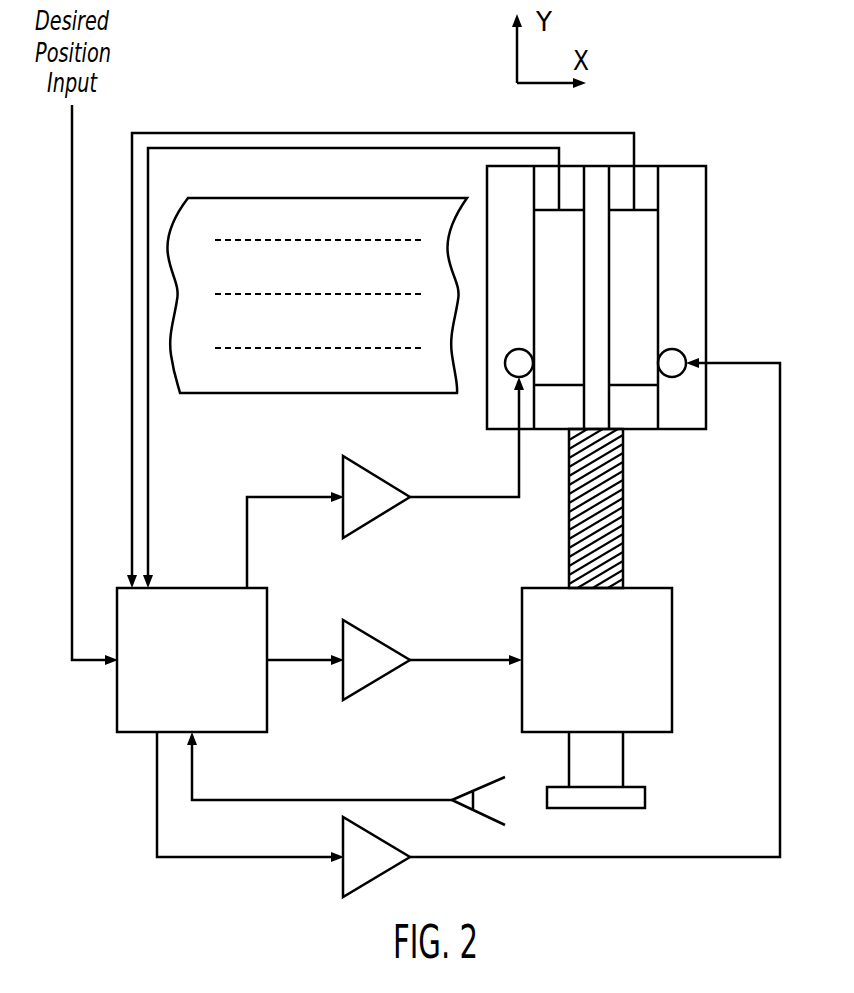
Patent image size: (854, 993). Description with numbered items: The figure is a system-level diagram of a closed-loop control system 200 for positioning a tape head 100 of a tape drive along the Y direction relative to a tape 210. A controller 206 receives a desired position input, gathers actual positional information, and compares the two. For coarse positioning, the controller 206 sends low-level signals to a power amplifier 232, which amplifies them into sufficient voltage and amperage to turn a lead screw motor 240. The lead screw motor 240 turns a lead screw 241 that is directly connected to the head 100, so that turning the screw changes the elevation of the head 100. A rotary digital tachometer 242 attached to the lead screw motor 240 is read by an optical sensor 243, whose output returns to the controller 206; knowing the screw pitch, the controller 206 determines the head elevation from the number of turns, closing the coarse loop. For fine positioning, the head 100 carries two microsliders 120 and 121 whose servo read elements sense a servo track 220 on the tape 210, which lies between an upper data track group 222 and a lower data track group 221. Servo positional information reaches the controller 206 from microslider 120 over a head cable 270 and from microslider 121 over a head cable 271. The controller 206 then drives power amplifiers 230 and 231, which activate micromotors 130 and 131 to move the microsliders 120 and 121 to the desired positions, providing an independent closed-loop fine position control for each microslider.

The head 100 is at (638, 297).
The microslider 120 is at (580, 262).
The microslider 121 is at (655, 262).
The micromotor 130 is at (519, 349).
The micromotor 131 is at (677, 349).
The control system 200 is at (350, 99).
The controller 206 is at (212, 674).
The tape 210 is at (300, 198).
The servo track 220 is at (290, 294).
The data track group 221 is at (290, 348).
The data track group 222 is at (290, 240).
The power amplifier 230 is at (387, 510).
The power amplifier 231 is at (387, 870).
The power amplifier 232 is at (387, 673).
The lead screw motor 240 is at (616, 674).
The lead screw 241 is at (623, 510).
The rotary digital tachometer 242 is at (645, 798).
The optical sensor 243 is at (452, 800).
The head cable 270 is at (150, 492).
The head cable 271 is at (130, 492).